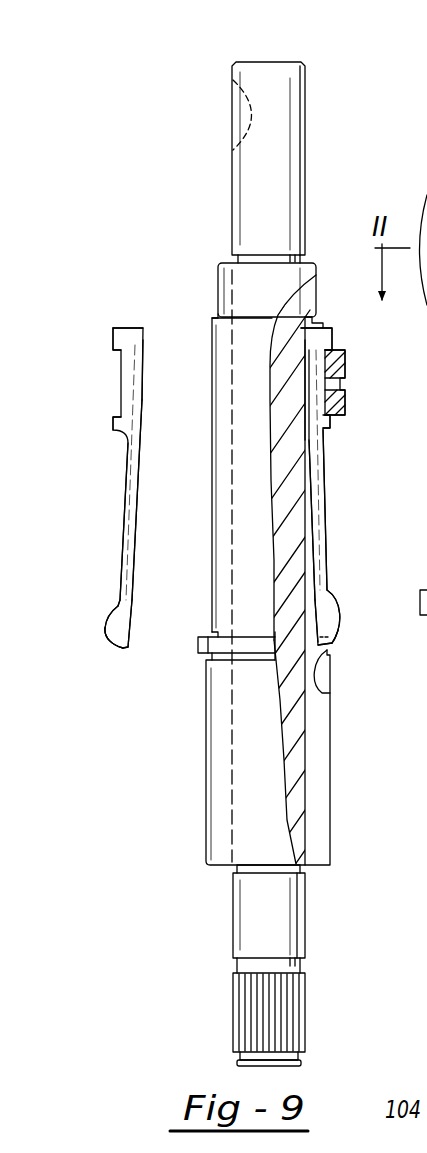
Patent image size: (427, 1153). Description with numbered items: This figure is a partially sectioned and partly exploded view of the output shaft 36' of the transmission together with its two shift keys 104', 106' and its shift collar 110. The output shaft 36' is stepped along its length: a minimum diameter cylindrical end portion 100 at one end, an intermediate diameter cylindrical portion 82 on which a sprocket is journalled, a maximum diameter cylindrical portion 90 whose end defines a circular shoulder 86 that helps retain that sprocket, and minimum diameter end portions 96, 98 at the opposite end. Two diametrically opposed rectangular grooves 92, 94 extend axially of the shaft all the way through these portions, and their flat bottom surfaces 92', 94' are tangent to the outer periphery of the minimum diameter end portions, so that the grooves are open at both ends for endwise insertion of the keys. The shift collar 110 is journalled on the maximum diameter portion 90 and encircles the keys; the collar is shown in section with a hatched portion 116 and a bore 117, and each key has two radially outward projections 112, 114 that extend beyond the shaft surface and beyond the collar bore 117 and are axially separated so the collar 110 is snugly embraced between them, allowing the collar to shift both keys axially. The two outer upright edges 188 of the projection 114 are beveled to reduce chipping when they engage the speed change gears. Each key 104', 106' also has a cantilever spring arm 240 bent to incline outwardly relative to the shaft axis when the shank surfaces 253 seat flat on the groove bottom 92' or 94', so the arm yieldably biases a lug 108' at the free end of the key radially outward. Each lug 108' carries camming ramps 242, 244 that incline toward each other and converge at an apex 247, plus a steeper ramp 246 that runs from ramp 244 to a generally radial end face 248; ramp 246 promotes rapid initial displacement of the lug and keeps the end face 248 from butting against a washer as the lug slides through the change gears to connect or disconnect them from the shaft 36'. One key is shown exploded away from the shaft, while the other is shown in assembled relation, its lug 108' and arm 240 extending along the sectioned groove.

The output shaft 36' is at (269, 135).
The minimum diameter cylindrical end portion 100 is at (302, 150).
The intermediate diameter cylindrical portion 82 is at (218, 290).
The circular shoulder 86 is at (212, 320).
The maximum diameter cylindrical portion 90 is at (212, 361).
The rectangular groove 92 is at (186, 454).
The flat bottom surface 92' is at (196, 492).
The rectangular groove 94 is at (326, 617).
The flat bottom surface 94' is at (293, 751).
The minimum diameter cylindrical end portion 96 is at (305, 913).
The minimum diameter cylindrical end portion 98 is at (305, 1006).
The shift key 104' is at (84, 488).
The shift key 106' is at (360, 486).
The lug 108' is at (260, 599).
The shift collar 110 is at (358, 362).
The projection 112 is at (113, 422).
The projection 114 is at (113, 338).
The upper block portion 116 is at (345, 374).
The bore 117 is at (338, 395).
The outer upright edge 188 is at (122, 328).
The cantilever spring arm 240 is at (125, 560).
The ramp 242 is at (113, 610).
The ramp 244 is at (108, 636).
The ramp 246 is at (117, 649).
The apex 247 is at (105, 623).
The end face 248 is at (126, 651).
The shank surface 253 is at (143, 396).